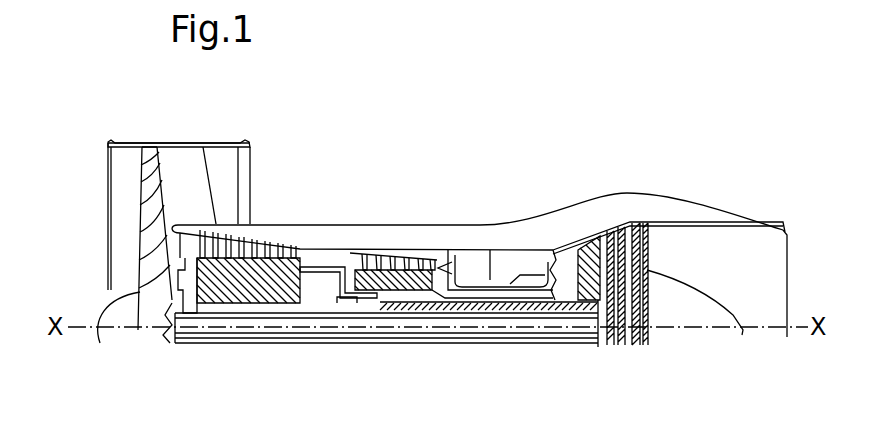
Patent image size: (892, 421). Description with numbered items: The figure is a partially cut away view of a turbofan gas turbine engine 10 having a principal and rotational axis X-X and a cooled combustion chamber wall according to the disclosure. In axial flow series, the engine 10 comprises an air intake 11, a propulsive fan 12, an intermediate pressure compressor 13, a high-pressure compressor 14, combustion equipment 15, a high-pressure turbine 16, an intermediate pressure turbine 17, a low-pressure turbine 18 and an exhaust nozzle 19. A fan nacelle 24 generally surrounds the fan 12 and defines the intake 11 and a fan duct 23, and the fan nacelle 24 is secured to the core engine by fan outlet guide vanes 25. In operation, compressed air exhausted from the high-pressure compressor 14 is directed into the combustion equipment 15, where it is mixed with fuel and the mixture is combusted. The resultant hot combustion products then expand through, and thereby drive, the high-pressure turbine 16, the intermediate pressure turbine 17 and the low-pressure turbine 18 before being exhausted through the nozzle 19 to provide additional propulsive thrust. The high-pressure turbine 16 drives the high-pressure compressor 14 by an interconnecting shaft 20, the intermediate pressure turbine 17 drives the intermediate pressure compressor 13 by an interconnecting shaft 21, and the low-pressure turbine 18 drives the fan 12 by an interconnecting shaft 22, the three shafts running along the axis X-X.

The gas turbine engine 10 is at (387, 152).
The air intake 11 is at (100, 222).
The propulsive fan 12 is at (163, 170).
The intermediate pressure compressor 13 is at (258, 273).
The high-pressure compressor 14 is at (390, 255).
The combustion equipment 15 is at (497, 249).
The high-pressure turbine 16 is at (553, 250).
The intermediate pressure turbine 17 is at (585, 250).
The low-pressure turbine 18 is at (657, 243).
The exhaust nozzle 19 is at (760, 243).
The interconnecting shaft 20 is at (533, 300).
The interconnecting shaft 21 is at (350, 304).
The interconnecting shaft 22 is at (248, 345).
The fan duct 23 is at (190, 182).
The fan nacelle 24 is at (126, 142).
The fan outlet guide vanes 25 is at (243, 162).